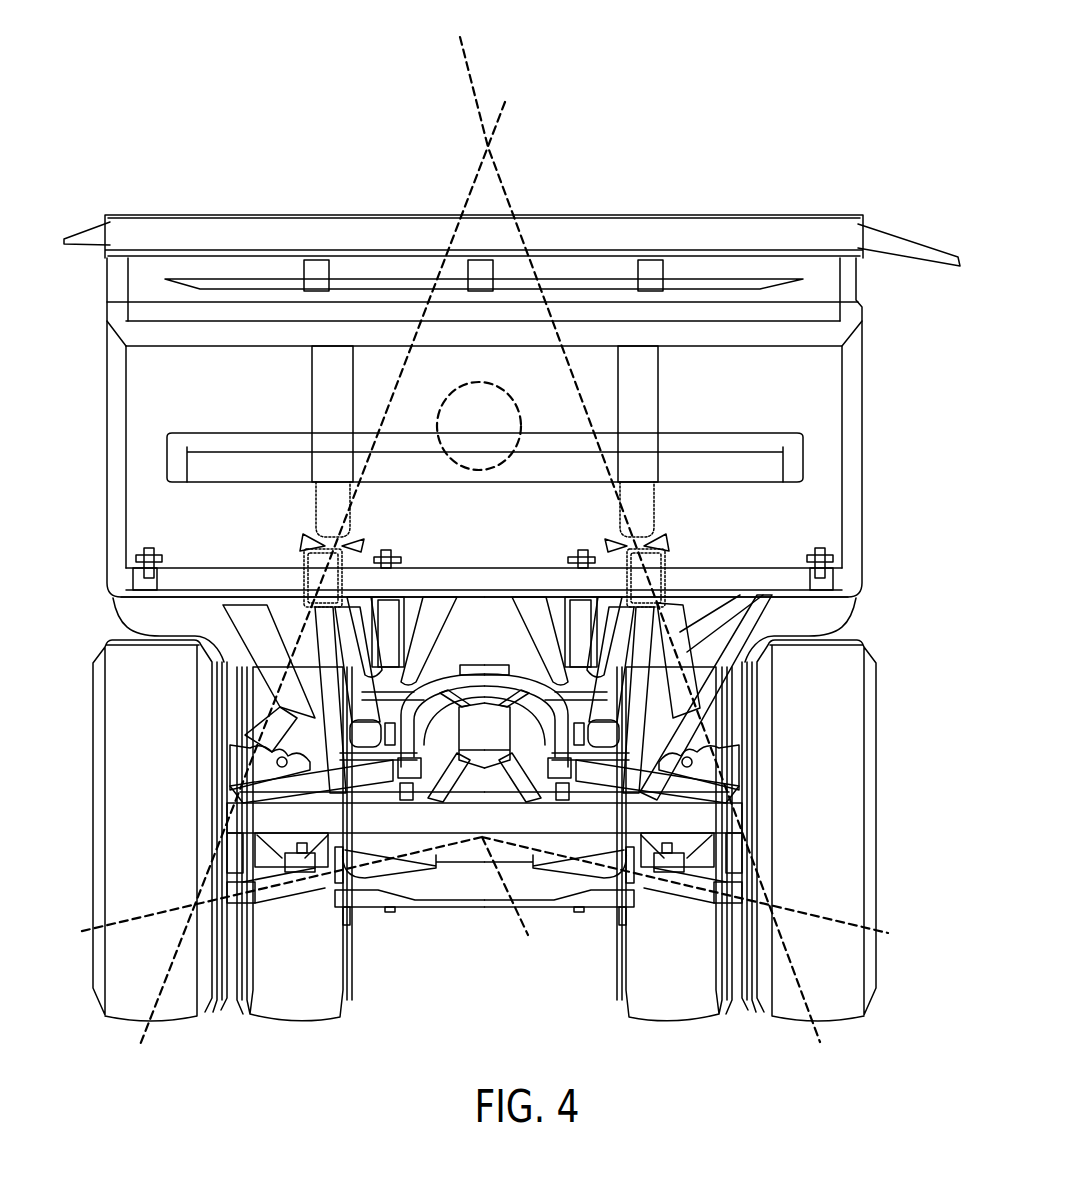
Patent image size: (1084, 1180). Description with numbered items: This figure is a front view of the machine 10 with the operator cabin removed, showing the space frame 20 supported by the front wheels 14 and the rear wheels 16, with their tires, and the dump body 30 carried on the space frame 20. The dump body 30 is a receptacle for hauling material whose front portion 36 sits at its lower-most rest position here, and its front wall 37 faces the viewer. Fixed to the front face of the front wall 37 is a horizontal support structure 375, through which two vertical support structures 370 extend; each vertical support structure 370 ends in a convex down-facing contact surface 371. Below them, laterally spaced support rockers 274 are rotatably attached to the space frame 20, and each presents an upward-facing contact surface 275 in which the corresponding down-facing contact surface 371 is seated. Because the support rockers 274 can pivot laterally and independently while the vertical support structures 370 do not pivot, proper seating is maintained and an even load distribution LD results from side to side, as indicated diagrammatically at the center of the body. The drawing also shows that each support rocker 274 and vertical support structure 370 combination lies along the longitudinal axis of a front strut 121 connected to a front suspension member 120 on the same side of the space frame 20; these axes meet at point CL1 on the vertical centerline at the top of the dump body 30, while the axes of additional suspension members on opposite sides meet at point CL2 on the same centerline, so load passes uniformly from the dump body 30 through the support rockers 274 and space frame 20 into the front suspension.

The machine 10 is at (158, 150).
The front wheels 14 is at (845, 877).
The rear wheels 16 is at (301, 995).
The space frame 20 is at (458, 935).
The dump body 30 is at (878, 183).
The front portion 36 is at (878, 272).
The front wall 37 is at (135, 403).
The front suspension members 120 is at (735, 785).
The front struts 121 is at (697, 672).
The support rocker 274 is at (328, 547).
The upward-facing contact surface 275 is at (312, 555).
The vertical support structures 370 is at (316, 490).
The down-facing contact surface 371 is at (313, 545).
The horizontal support structure 375 is at (250, 456).
The point CL1 is at (480, 522).
The point CL2 is at (483, 907).
The load distribution LD is at (486, 384).